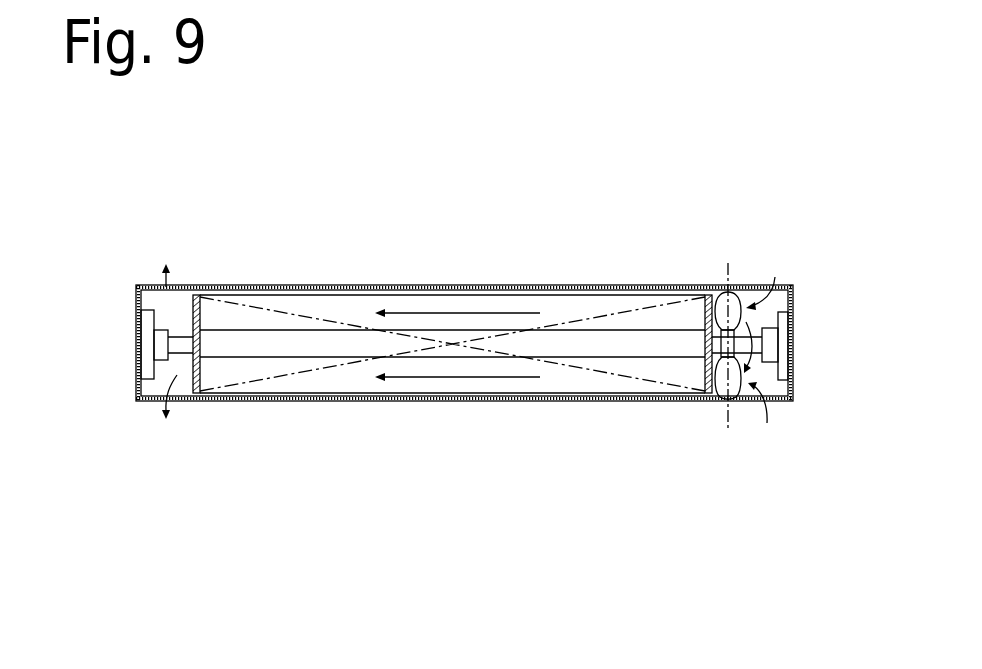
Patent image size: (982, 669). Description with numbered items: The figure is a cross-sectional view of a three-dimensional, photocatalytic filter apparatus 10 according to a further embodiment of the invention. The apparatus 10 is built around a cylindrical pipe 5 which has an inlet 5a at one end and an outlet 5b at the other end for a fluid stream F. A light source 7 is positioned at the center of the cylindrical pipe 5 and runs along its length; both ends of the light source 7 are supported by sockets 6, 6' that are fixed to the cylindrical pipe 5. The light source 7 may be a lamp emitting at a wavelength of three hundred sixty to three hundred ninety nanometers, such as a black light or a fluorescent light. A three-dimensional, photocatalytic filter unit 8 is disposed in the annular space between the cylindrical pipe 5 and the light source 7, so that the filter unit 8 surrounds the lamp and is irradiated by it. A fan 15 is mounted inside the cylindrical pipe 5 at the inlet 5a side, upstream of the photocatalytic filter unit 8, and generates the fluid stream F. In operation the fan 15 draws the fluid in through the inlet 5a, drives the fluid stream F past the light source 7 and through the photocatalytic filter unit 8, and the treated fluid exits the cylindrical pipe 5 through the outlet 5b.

The three-dimensional, photocatalytic filter apparatus 10 is at (493, 232).
The cylindrical pipe 5 is at (390, 287).
The inlet 5a is at (752, 287).
The outlet 5b is at (177, 307).
The socket 6 is at (126, 341).
The socket 6' is at (796, 343).
The light source 7 is at (355, 345).
The three-dimensional, photocatalytic filter unit 8 is at (570, 310).
The fan 15 is at (717, 382).
The fluid stream F is at (763, 347).